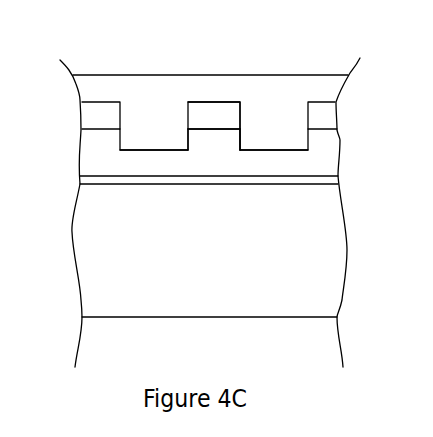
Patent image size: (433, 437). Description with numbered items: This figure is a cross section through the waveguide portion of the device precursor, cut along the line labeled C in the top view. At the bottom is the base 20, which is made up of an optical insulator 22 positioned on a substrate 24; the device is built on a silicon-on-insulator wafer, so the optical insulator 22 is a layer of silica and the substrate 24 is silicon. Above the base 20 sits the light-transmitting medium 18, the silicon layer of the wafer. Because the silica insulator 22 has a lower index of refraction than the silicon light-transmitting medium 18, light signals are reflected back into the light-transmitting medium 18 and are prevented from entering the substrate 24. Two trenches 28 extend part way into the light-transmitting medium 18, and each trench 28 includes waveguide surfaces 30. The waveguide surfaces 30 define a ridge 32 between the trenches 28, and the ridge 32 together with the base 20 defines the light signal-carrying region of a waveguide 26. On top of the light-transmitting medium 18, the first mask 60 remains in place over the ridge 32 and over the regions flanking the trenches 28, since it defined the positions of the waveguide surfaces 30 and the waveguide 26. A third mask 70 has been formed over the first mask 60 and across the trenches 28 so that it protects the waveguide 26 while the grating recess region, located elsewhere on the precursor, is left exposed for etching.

The light-transmitting medium 18 is at (93, 152).
The base 20 is at (177, 264).
The optical insulator 22 is at (130, 185).
The substrate 24 is at (118, 288).
The waveguide 26 is at (248, 108).
The trench 28 is at (137, 152).
The waveguide surface 30 is at (190, 132).
The ridge 32 is at (231, 128).
The first mask 60 is at (93, 118).
The third mask 70 is at (150, 90).